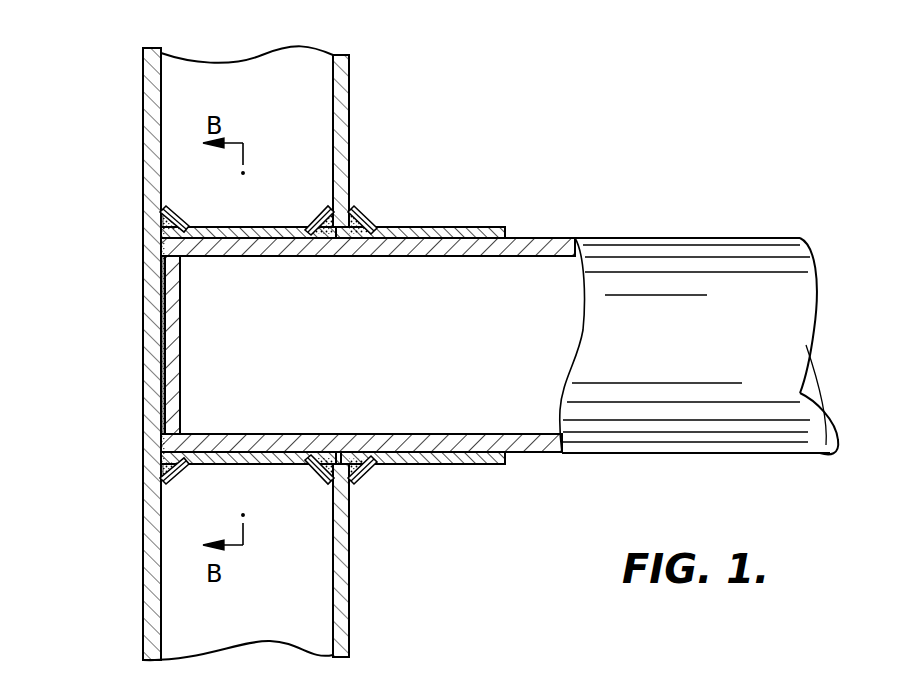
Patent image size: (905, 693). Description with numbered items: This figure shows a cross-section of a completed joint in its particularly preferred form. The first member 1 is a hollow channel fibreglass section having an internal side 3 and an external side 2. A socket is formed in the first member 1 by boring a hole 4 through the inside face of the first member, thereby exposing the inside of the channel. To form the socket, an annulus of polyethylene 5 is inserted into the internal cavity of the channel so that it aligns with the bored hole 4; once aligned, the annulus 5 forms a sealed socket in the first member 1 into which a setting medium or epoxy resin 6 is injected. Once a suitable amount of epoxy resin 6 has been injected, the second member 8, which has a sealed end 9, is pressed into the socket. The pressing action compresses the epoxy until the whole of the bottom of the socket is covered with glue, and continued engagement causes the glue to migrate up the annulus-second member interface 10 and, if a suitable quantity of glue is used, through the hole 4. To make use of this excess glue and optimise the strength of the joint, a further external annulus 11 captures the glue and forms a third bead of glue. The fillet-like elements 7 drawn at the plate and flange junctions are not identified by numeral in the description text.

The first member 1 is at (253, 330).
The external side 2 is at (143, 92).
The internal side 3 is at (350, 140).
The hole 4 is at (338, 450).
The annulus of polyethylene 5 is at (270, 227).
The epoxy resin 6 is at (160, 283).
The fillet angle 7 is at (172, 210).
The second member 8 is at (683, 280).
The sealed end 9 is at (180, 299).
The annulus-second member interface 10 is at (268, 468).
The external annulus 11 is at (447, 467).